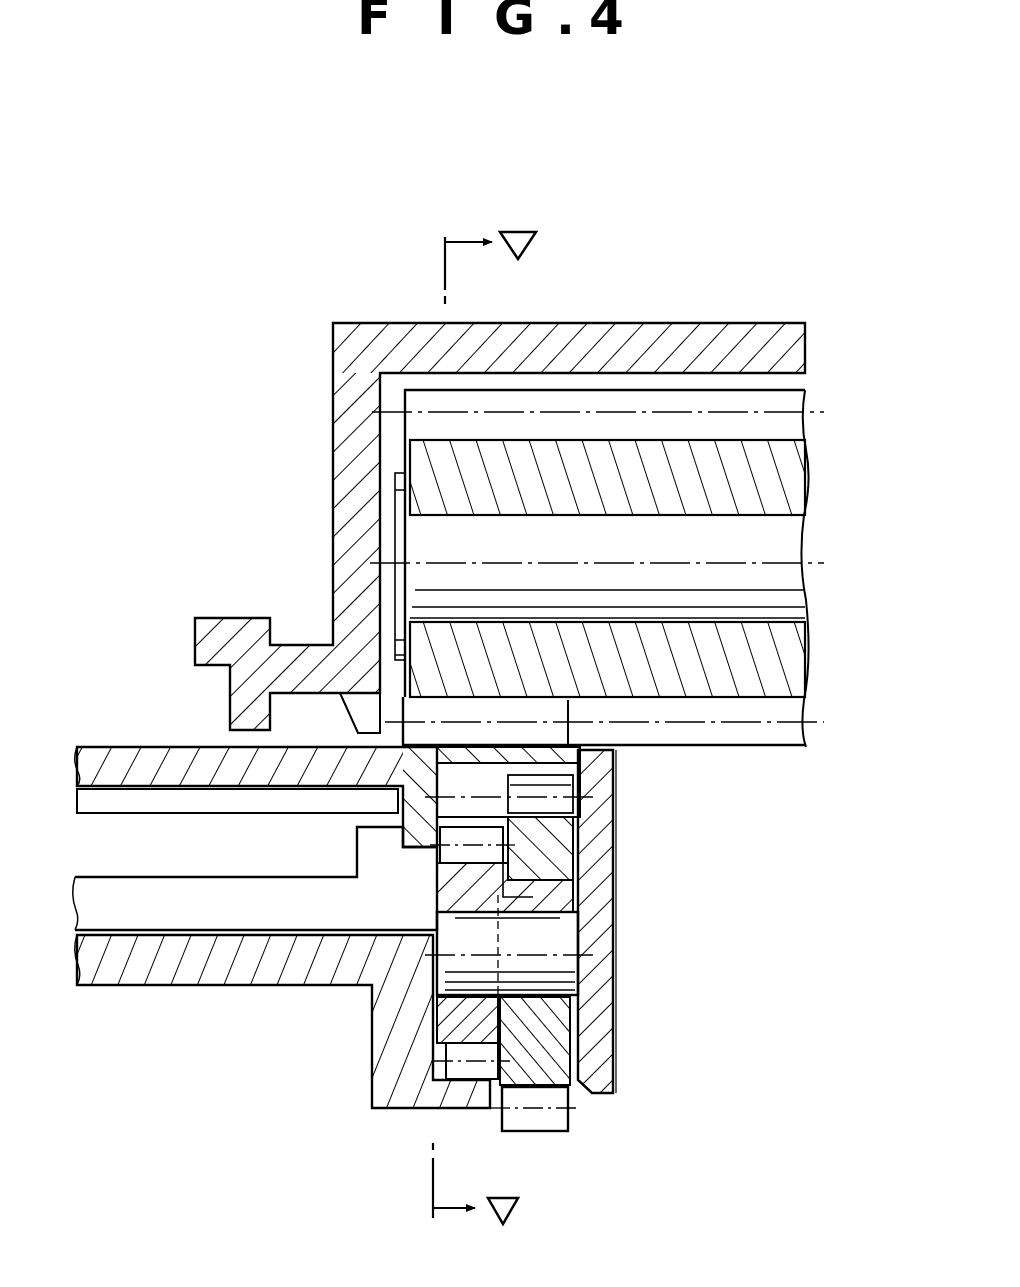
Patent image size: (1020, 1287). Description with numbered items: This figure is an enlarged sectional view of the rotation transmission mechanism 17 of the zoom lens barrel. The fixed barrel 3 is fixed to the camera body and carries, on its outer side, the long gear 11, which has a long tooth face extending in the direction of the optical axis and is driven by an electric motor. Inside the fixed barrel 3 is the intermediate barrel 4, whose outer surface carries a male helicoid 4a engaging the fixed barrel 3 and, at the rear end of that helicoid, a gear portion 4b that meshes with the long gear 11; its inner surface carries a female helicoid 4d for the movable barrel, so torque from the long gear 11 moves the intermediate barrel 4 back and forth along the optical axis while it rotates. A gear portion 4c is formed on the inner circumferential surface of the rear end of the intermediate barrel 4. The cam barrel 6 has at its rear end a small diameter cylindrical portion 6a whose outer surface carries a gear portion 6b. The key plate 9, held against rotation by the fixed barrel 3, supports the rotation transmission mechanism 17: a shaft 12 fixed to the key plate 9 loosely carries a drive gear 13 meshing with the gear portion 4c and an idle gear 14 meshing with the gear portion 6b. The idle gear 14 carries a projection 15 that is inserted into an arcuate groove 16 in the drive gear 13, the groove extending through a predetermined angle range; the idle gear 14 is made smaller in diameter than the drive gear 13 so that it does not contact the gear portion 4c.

The fixed barrel 3 is at (720, 340).
The intermediate barrel 4 is at (157, 747).
The male helicoid 4a is at (297, 650).
The gear portion 4b is at (267, 674).
The gear portion 4c is at (490, 780).
The female helicoid 4d is at (183, 797).
The cam barrel 6 is at (167, 963).
The small diameter cylindrical portion 6a is at (462, 1109).
The gear portion 6b is at (393, 1109).
The key plate 9 is at (600, 1050).
The long gear 11 is at (790, 651).
The shaft 12 is at (372, 1001).
The drive gear 13 is at (567, 1087).
The idle gear 14 is at (376, 1044).
The projection 15 is at (552, 828).
The arcuate groove 16 is at (545, 872).
The rotation transmission mechanism 17 is at (518, 1152).